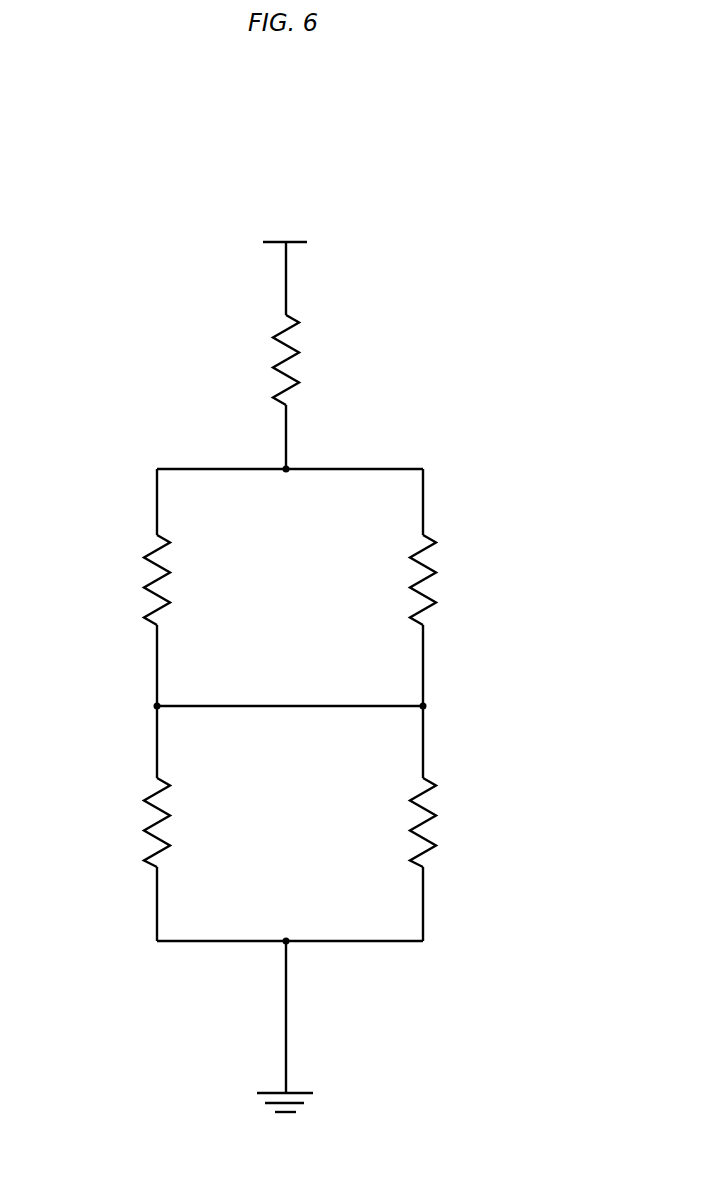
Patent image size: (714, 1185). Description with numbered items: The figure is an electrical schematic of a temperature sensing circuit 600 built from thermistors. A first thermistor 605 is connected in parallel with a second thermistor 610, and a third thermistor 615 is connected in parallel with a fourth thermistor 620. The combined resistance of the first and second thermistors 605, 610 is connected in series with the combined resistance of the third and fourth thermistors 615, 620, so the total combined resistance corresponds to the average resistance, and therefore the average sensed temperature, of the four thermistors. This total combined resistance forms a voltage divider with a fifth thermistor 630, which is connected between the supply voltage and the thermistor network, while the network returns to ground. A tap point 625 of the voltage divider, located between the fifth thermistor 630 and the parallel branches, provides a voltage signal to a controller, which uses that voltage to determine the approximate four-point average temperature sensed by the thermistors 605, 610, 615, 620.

The temperature sensing circuit 600 is at (503, 197).
The first thermistor 605 is at (144, 557).
The second thermistor 610 is at (436, 572).
The third thermistor 615 is at (144, 800).
The fourth thermistor 620 is at (436, 815).
The tap point 625 is at (288, 469).
The fifth thermistor 630 is at (299, 351).